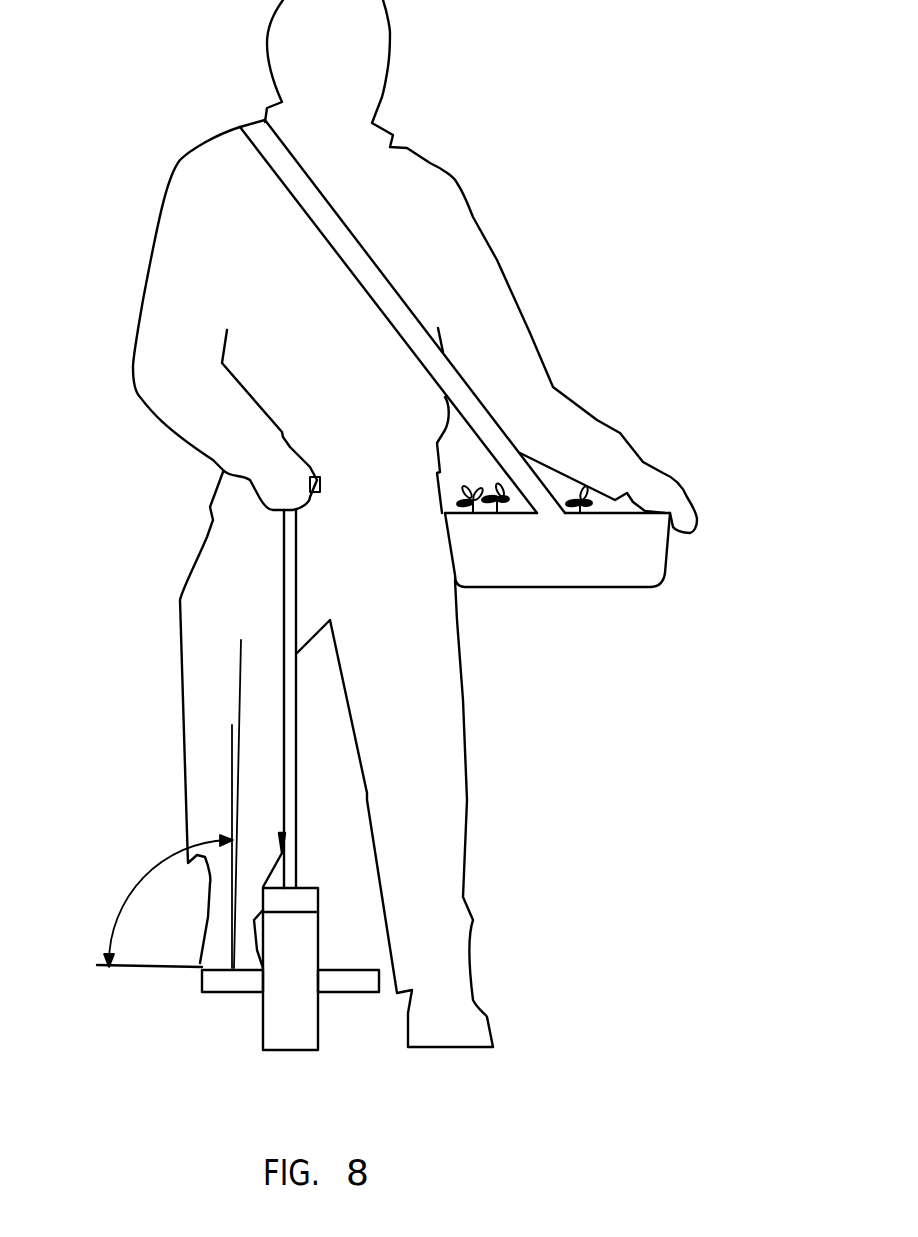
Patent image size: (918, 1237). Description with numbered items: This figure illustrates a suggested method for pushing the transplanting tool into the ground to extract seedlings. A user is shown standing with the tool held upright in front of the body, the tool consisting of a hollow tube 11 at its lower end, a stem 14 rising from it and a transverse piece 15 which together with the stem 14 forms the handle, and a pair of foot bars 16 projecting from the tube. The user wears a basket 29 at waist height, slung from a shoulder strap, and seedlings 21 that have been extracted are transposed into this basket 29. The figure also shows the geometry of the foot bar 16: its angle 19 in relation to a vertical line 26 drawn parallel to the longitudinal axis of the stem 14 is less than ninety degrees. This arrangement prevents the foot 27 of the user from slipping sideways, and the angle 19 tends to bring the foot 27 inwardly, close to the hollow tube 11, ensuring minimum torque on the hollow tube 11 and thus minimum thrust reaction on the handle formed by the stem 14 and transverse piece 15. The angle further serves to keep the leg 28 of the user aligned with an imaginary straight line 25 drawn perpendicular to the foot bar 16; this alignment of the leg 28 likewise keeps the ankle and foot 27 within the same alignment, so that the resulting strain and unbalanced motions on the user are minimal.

The hollow tube 11 is at (263, 1032).
The stem 14 is at (282, 585).
The transverse piece 15 is at (313, 477).
The foot bar 16 is at (202, 982).
The angle 19 is at (121, 912).
The seedlings 21 is at (573, 497).
The imaginary straight line 25 is at (241, 685).
The vertical line 26 is at (232, 747).
The foot 27 is at (219, 966).
The leg 28 is at (197, 785).
The basket 29 is at (555, 578).